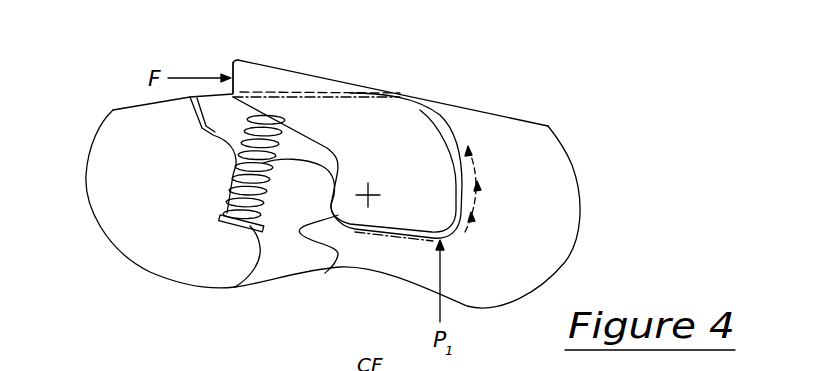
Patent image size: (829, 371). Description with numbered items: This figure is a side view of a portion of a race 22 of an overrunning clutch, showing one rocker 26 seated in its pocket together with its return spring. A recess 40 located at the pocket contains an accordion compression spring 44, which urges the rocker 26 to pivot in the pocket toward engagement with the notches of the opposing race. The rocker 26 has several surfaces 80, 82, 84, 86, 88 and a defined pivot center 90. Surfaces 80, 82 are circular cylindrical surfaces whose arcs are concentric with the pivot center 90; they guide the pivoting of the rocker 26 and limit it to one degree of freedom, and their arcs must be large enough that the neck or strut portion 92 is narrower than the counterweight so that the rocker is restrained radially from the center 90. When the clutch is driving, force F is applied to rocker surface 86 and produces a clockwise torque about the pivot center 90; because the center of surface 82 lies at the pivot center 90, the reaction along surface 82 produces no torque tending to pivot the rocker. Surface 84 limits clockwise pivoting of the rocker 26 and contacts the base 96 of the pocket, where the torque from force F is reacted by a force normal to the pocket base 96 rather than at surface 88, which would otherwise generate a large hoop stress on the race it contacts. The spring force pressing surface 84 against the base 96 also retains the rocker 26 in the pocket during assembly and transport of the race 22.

The race 22 is at (563, 220).
The rocker 26 is at (414, 186).
The recess 40 is at (235, 287).
The accordion compression spring 44 is at (233, 175).
The circular cylindrical surface 80 is at (400, 237).
The circular cylindrical surface 82 is at (480, 108).
The rocker surface 84 is at (423, 240).
The rocker surface 86 is at (233, 63).
The rocker surface 88 is at (312, 75).
The pivot center 90 is at (368, 192).
The neck or strut portion 92 is at (250, 72).
The base of the pocket 96 is at (338, 228).